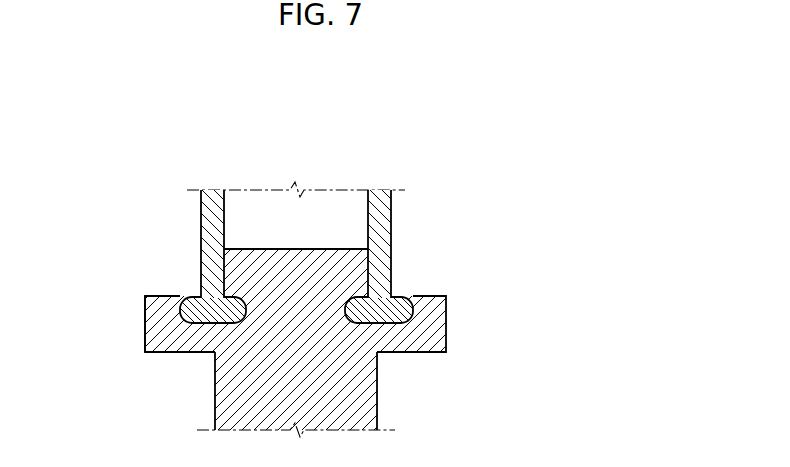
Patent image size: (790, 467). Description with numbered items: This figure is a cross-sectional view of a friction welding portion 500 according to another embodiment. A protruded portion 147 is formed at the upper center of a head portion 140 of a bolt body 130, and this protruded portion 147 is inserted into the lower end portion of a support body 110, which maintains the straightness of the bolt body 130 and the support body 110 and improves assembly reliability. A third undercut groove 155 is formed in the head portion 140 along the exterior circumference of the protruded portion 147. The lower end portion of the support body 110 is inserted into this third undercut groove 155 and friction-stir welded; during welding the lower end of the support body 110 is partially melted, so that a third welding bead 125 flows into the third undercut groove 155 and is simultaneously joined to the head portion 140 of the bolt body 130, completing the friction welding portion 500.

The friction welding portion 500 is at (310, 118).
The support body 110 is at (384, 210).
The protruded portion 147 is at (268, 257).
The third welding bead 125 is at (412, 312).
The bolt body 130 is at (230, 396).
The head portion 140 is at (140, 302).
The third undercut groove 155 is at (186, 318).